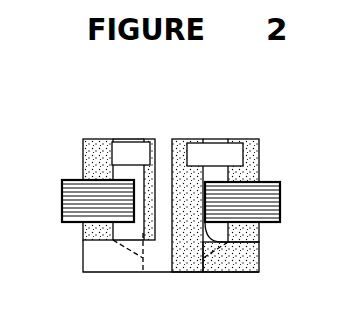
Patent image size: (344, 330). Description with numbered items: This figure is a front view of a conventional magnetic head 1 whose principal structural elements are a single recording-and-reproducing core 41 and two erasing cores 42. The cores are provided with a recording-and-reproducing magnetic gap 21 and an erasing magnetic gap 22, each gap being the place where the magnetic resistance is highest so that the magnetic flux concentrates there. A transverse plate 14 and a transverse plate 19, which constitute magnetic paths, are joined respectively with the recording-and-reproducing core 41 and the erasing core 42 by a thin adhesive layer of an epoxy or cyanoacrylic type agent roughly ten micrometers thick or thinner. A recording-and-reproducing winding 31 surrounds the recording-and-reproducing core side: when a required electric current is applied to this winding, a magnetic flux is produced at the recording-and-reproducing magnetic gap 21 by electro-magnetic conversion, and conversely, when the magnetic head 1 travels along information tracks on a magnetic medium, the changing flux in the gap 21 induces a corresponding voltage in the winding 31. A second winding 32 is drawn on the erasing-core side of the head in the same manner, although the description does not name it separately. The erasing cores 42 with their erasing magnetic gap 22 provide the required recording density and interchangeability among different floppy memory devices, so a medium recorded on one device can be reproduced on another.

The magnetic head 1 is at (228, 122).
The transverse plate 14 is at (128, 148).
The transverse plate 19 is at (220, 153).
The recording-and-reproducing magnetic gap 21 is at (143, 273).
The erasing magnetic gap 22 is at (206, 273).
The recording-and-reproducing winding 31 is at (67, 223).
The second coil 32 is at (280, 200).
The recording-and-reproducing core 41 is at (95, 150).
The erasing core 42 is at (259, 257).